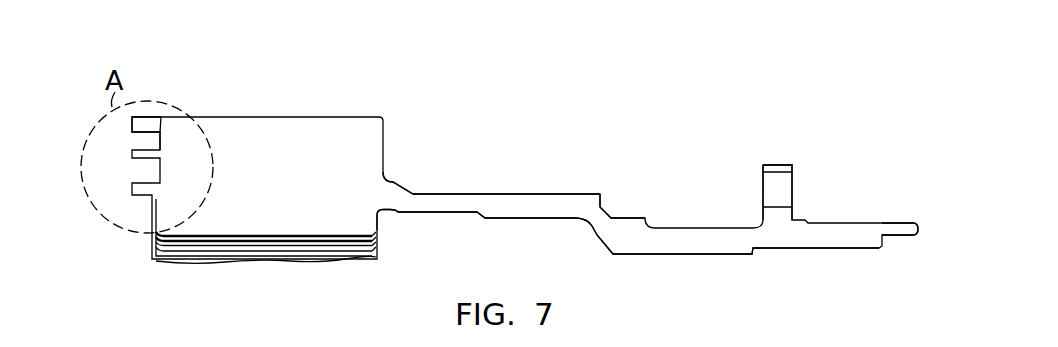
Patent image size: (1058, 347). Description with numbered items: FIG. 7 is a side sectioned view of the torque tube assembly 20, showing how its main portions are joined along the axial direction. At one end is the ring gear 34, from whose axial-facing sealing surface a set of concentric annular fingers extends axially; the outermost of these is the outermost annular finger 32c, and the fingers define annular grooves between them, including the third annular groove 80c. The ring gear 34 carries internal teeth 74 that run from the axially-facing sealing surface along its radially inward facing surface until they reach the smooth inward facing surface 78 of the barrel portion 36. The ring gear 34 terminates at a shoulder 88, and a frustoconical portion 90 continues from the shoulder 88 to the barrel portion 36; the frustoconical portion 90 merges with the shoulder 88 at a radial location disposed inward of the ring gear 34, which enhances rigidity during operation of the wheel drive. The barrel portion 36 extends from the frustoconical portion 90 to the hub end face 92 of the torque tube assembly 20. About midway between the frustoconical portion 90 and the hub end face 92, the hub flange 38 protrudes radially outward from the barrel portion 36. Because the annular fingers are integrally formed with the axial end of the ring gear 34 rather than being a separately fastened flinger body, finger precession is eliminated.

The outermost annular finger 32c is at (143, 122).
The third annular groove 80c is at (155, 140).
The ring gear 34 is at (302, 124).
The shoulder 88 is at (385, 155).
The torque tube assembly 20 is at (551, 172).
The frustoconical portion 90 is at (605, 220).
The hub flange 38 is at (777, 163).
The hub end face 92 is at (917, 227).
The barrel portion 36 is at (717, 246).
The smooth inward facing surface 78 is at (380, 228).
The internal teeth 74 is at (278, 247).